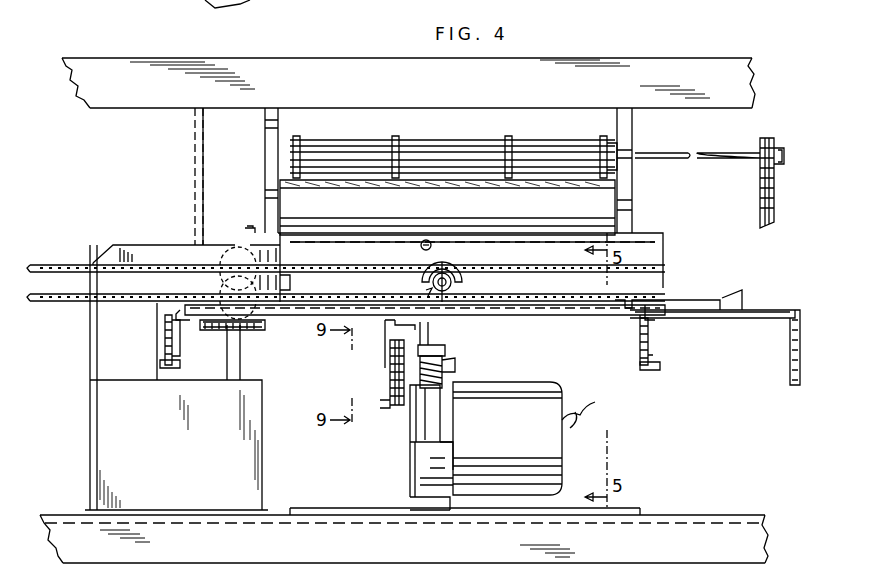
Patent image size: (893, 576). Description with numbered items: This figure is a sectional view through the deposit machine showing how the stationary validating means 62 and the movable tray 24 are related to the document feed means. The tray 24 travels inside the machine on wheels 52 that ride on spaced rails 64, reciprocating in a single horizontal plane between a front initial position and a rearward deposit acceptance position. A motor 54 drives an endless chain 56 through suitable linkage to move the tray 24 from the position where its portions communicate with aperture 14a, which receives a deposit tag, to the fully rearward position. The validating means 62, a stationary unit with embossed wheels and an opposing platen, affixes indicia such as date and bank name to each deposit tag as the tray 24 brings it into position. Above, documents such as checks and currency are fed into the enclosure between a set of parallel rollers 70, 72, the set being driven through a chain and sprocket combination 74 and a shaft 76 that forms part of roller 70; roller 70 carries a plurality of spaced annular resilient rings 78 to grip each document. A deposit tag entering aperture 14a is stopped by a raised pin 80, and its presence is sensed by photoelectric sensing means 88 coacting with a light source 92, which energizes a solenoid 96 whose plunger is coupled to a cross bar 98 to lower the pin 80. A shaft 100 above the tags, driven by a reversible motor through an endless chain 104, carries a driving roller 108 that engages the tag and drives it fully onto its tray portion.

The second aperture means 14a is at (742, 302).
The tray 24 is at (290, 323).
The wheels 52 is at (182, 342).
The motor 54 is at (506, 431).
The endless chain 56 is at (392, 370).
The validating means 62 is at (162, 436).
The rails 64 is at (183, 364).
The roller 70 is at (450, 152).
The roller 72 is at (458, 215).
The chain and sprocket combination 74 is at (758, 200).
The shaft 76 is at (660, 152).
The annular resilient rings 78 is at (393, 142).
The raised pin 80 is at (386, 330).
The photoelectric sensing means 88 is at (462, 366).
The light source 92 is at (418, 249).
The solenoid 96 is at (425, 412).
The cross bar 98 is at (440, 345).
The shaft 100 is at (456, 282).
The endless chain 104 is at (80, 262).
The driving roller 108 is at (462, 270).